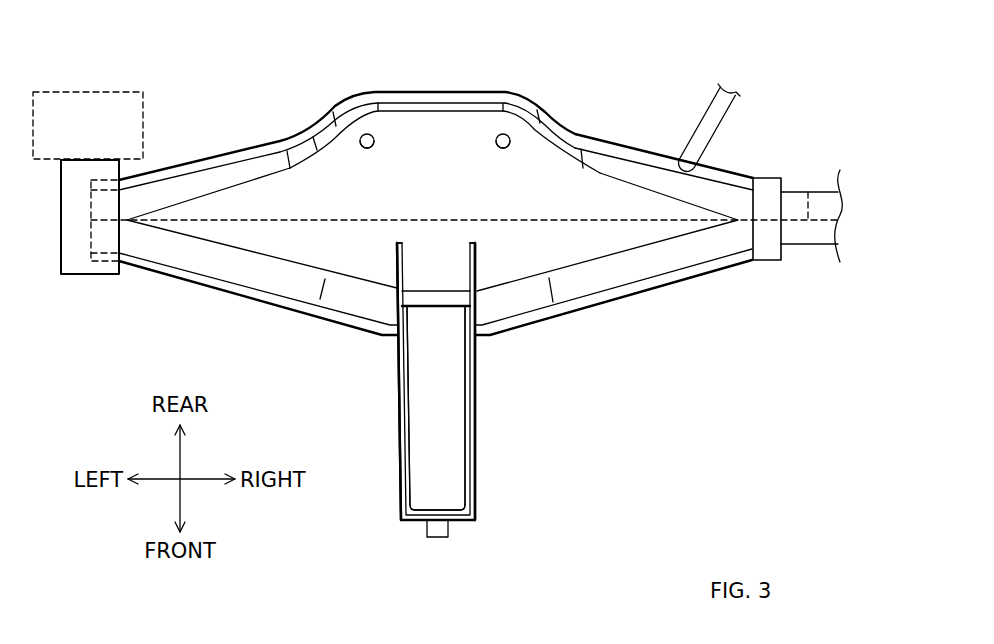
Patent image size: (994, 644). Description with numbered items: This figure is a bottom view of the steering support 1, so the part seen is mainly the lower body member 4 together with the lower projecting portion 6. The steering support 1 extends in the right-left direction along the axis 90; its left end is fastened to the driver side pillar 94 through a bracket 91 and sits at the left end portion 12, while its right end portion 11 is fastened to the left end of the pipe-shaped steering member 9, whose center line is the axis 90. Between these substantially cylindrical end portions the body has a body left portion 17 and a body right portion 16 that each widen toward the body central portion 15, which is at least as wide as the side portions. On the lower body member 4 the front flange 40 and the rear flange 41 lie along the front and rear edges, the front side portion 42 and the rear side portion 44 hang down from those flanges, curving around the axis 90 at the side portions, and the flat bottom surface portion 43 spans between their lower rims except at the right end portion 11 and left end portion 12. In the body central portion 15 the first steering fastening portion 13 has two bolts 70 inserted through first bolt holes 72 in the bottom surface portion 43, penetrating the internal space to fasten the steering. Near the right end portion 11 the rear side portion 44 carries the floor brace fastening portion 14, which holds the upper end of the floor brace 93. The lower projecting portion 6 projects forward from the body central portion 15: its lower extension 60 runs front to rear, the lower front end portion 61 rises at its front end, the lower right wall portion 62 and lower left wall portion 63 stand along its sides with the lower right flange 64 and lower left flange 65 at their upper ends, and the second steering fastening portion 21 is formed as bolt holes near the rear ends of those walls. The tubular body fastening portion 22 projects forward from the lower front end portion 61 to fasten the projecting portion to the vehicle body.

The steering support 1 is at (666, 423).
The lower body member 4 is at (272, 100).
The lower projecting portion 6 is at (492, 430).
The steering member 9 is at (812, 246).
The right end portion 11 is at (768, 190).
The left end portion 12 is at (100, 260).
The first steering fastening portion 13 is at (500, 120).
The floor brace fastening portion 14 is at (664, 150).
The body central portion 15 is at (443, 207).
The body right portion 16 is at (622, 230).
The body left portion 17 is at (258, 205).
The second steering fastening portion 21 is at (395, 278).
The body fastening portion 22 is at (438, 532).
The front flange 40 is at (606, 300).
The rear flange 41 is at (583, 140).
The front side portion 42 is at (292, 292).
The bottom surface portion 43 is at (300, 197).
The rear side portion 44 is at (313, 133).
The lower extension 60 is at (452, 431).
The lower front end portion 61 is at (430, 503).
The lower right wall portion 62 is at (467, 380).
The lower left wall portion 63 is at (403, 402).
The lower right flange 64 is at (480, 343).
The lower left flange 65 is at (397, 357).
The bolts 70 is at (494, 137).
The first bolt holes 72 is at (498, 147).
The axis 90 is at (808, 192).
The bracket 91 is at (68, 276).
The floor brace 93 is at (704, 130).
The driver side pillar 94 is at (88, 92).